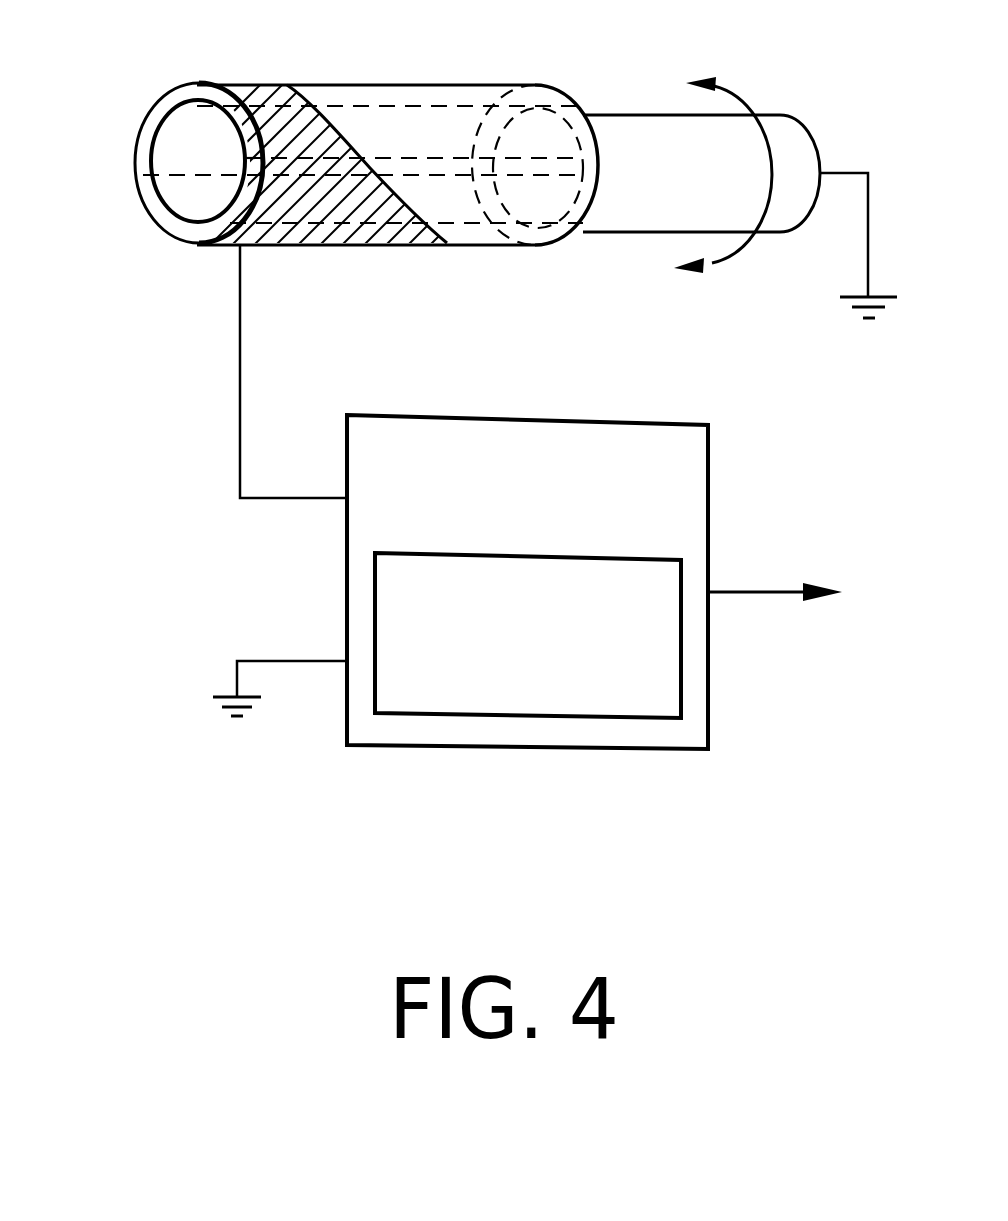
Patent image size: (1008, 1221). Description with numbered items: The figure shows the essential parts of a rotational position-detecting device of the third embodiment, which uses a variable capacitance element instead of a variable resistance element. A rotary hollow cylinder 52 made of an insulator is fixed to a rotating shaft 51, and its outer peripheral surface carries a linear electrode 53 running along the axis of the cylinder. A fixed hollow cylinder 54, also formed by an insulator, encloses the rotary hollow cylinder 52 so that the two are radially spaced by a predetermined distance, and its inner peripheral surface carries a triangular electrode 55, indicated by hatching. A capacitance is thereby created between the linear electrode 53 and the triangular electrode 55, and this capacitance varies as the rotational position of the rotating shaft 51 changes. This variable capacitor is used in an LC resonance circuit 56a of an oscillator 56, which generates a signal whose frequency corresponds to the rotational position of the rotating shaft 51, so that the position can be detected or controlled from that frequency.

The rotating shaft 51 is at (798, 130).
The rotary hollow cylinder 52 is at (177, 126).
The linear electrode 53 is at (245, 163).
The fixed hollow cylinder 54 is at (468, 87).
The triangular electrode 55 is at (269, 90).
The oscillator 56 is at (430, 417).
The LC resonance circuit 56a is at (683, 682).